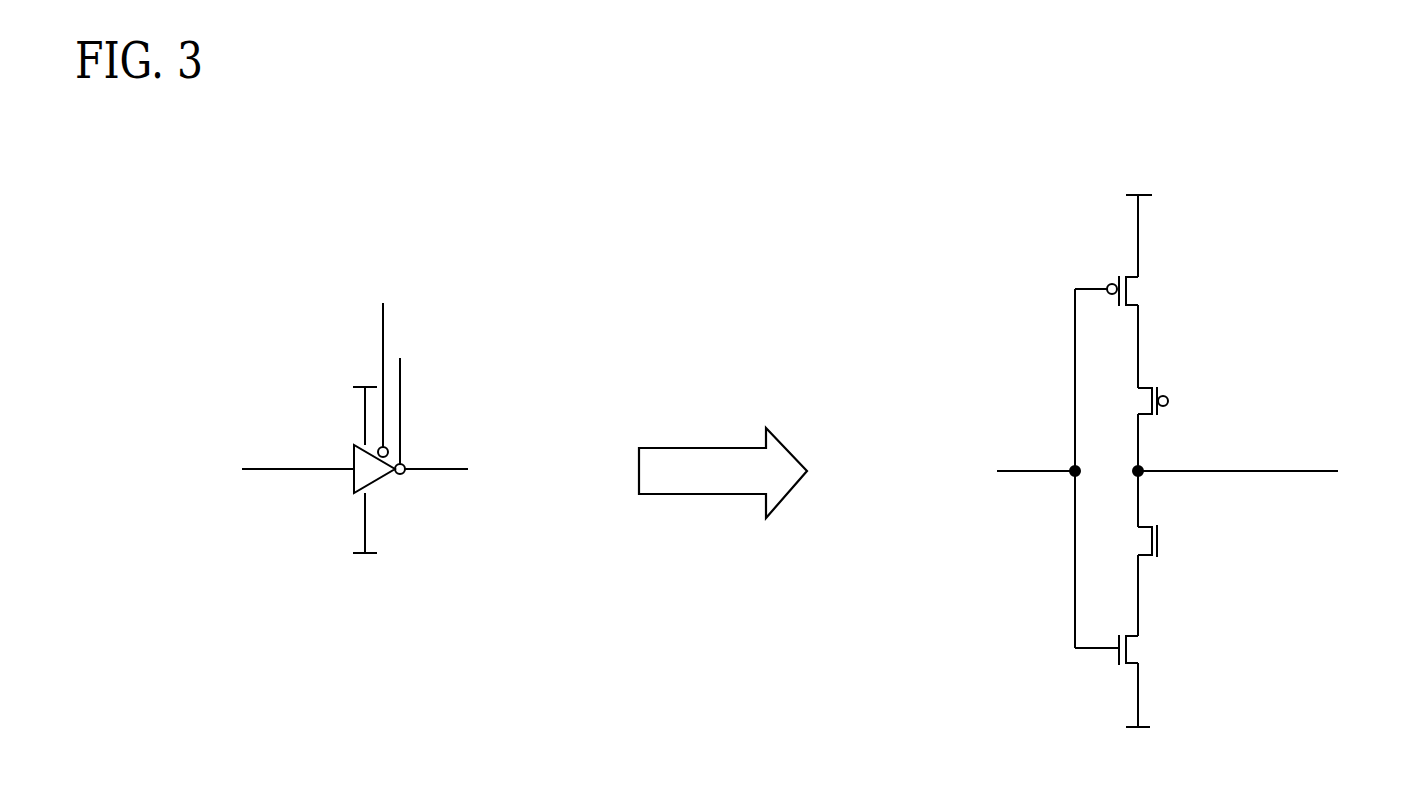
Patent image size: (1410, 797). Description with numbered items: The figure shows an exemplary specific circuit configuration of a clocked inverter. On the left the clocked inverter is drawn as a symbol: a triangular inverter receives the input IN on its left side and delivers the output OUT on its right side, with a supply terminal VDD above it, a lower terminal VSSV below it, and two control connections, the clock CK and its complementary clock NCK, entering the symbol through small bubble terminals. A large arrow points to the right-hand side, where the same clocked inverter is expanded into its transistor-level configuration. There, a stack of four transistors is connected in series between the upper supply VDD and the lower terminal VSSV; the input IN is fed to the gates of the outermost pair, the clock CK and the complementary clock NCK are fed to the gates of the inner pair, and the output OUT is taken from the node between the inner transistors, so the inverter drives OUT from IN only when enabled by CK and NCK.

The input signal IN is at (647, 471).
The output signal OUT is at (901, 473).
The inverted clock signal NCK is at (1247, 401).
The clock signal CK is at (1247, 541).
The supply voltage VDD is at (751, 274).
The ground voltage VSSV is at (761, 673).